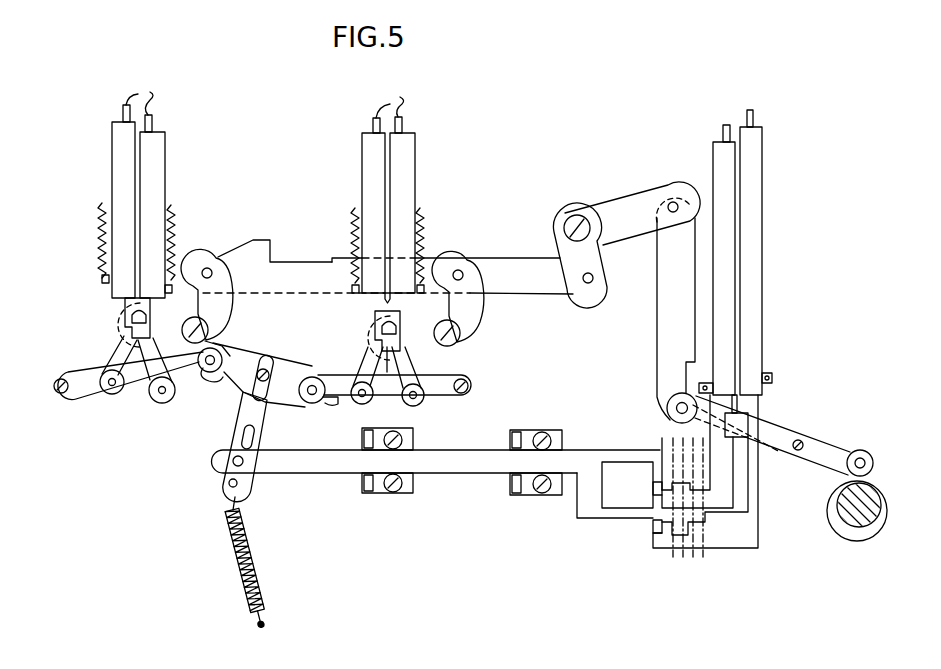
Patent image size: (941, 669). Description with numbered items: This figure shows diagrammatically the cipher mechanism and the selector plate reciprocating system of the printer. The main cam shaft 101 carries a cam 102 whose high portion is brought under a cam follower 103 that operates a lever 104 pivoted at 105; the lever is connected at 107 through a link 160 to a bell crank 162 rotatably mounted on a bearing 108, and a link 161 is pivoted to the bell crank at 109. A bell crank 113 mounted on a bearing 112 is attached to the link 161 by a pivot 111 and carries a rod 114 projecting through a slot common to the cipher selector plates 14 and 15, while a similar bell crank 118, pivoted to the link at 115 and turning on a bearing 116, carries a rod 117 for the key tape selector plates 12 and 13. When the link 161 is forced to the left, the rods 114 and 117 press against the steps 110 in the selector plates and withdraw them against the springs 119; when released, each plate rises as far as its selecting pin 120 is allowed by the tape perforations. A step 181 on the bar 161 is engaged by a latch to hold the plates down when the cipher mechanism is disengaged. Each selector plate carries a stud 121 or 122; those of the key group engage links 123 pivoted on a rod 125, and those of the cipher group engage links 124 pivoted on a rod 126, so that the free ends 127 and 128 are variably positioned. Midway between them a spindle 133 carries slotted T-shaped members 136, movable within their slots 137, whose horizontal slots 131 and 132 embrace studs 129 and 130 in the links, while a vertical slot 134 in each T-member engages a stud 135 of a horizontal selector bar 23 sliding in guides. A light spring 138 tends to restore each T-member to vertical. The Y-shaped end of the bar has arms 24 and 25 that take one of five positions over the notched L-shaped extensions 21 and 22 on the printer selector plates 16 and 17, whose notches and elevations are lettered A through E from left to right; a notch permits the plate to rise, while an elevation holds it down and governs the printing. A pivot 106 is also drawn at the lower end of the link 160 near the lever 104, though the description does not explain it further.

The key tape selector plate 12 is at (118, 150).
The key tape selector plate 13 is at (160, 150).
The cipher selector plate 14 is at (366, 150).
The cipher selector plate 15 is at (416, 150).
The printer selector plate 16 is at (740, 283).
The printer selector plate 17 is at (744, 236).
The notched L-shaped extension 21 is at (704, 502).
The notched L-shaped extension 22 is at (708, 548).
The horizontal selector bar 23 is at (472, 450).
The arm of selector bar 24 is at (631, 450).
The arm of selector bar 25 is at (633, 518).
The main cam shaft 101 is at (880, 506).
The cam 102 is at (884, 524).
The cam follower 103 is at (874, 463).
The lever 104 is at (826, 444).
The pivot 105 is at (801, 440).
The pivot 106 is at (676, 408).
The pivotal connection 107 is at (676, 203).
The bearing 108 is at (560, 212).
The pivot 109 is at (595, 278).
The step 110 is at (137, 348).
The pivot 111 is at (465, 275).
The bearing 112 is at (461, 332).
The bell crank 113 is at (484, 302).
The rod 114 is at (381, 326).
The pivot 115 is at (214, 273).
The bearing 116 is at (208, 326).
The rod 117 is at (131, 318).
The bell crank 118 is at (232, 302).
The spring 119 is at (98, 215).
The selecting pin 120 is at (263, 107).
The stud 121 is at (108, 394).
The stud 122 is at (162, 402).
The link 123 is at (76, 364).
The link 124 is at (480, 362).
The rod 125 is at (52, 385).
The rod 126 is at (470, 387).
The free end of link 127 is at (216, 337).
The free end of link 128 is at (321, 377).
The stud 129 is at (223, 359).
The stud 130 is at (305, 377).
The horizontal slot 131 is at (338, 405).
The horizontal slot 132 is at (205, 378).
The spindle 133 is at (257, 374).
The vertical slot 134 is at (243, 482).
The stud 135 is at (230, 461).
The T-shaped member 136 is at (283, 353).
The slot of T-member 137 is at (245, 396).
The light spring 138 is at (257, 546).
The link 160 is at (657, 305).
The link 161 is at (522, 258).
The bell crank 162 is at (628, 192).
The step 181 is at (272, 240).